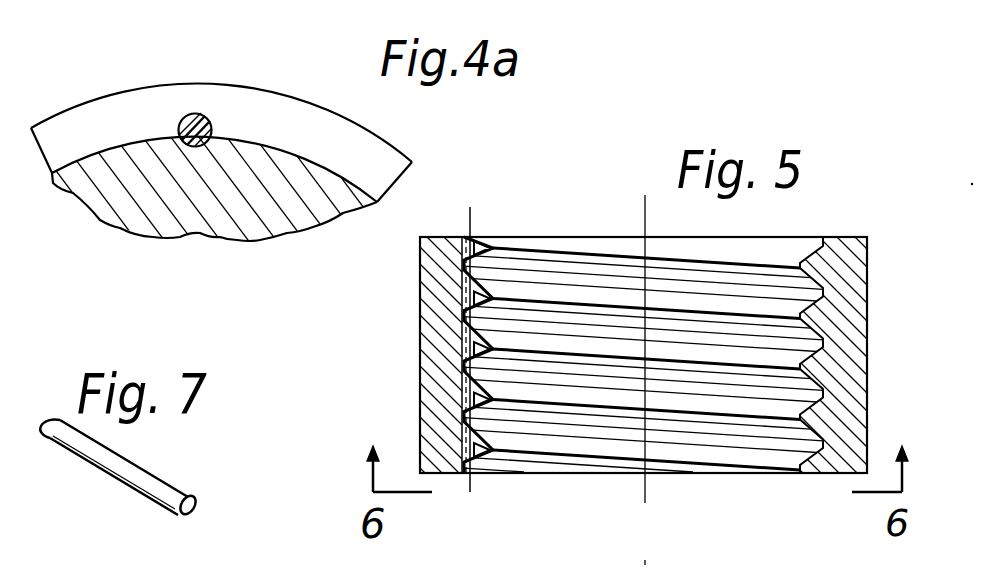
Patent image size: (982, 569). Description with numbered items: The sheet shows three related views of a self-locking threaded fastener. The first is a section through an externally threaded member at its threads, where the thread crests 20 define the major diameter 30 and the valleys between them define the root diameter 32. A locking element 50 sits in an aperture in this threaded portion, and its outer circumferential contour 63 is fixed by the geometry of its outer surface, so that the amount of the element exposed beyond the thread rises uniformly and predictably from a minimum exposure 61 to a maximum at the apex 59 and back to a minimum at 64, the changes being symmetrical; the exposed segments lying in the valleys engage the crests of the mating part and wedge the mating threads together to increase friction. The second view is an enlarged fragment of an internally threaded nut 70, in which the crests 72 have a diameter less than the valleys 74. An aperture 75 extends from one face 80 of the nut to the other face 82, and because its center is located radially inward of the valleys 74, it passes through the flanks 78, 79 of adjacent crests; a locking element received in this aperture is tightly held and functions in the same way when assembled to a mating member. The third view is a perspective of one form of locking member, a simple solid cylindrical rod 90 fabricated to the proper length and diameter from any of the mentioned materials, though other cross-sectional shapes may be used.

In FIG. 4A, the crests 20 is at (288, 92).
In FIG. 4A, the major diameter 30 is at (390, 143).
In FIG. 4A, the root diameter 32 is at (395, 182).
In FIG. 4A, the locking element 50 is at (216, 120).
In FIG. 4A, the apex 59 is at (196, 113).
In FIG. 4A, the minimum exposure 61 is at (180, 130).
In FIG. 4A, the outer circumferential contour 63 is at (183, 115).
In FIG. 4A, the minimum exposure 64 is at (213, 132).
In FIG. 5, the internally threaded nut 70 is at (422, 315).
In FIG. 5, the crests 72 is at (496, 292).
In FIG. 5, the valleys 74 is at (500, 450).
In FIG. 5, the aperture 75 is at (462, 345).
In FIG. 5, the flank 78 is at (475, 410).
In FIG. 5, the flank 79 is at (478, 357).
In FIG. 5, the face 80 is at (448, 477).
In FIG. 5, the face 82 is at (442, 237).
In FIG. 7, the solid cylindrical rod 90 is at (117, 472).